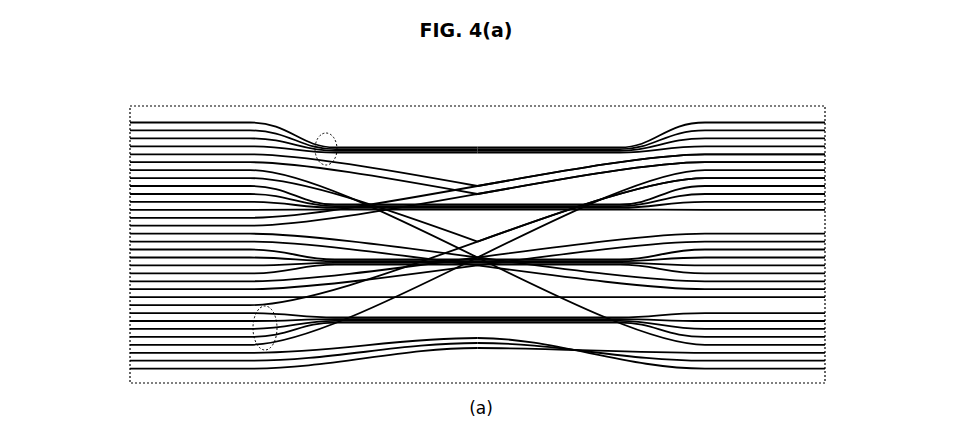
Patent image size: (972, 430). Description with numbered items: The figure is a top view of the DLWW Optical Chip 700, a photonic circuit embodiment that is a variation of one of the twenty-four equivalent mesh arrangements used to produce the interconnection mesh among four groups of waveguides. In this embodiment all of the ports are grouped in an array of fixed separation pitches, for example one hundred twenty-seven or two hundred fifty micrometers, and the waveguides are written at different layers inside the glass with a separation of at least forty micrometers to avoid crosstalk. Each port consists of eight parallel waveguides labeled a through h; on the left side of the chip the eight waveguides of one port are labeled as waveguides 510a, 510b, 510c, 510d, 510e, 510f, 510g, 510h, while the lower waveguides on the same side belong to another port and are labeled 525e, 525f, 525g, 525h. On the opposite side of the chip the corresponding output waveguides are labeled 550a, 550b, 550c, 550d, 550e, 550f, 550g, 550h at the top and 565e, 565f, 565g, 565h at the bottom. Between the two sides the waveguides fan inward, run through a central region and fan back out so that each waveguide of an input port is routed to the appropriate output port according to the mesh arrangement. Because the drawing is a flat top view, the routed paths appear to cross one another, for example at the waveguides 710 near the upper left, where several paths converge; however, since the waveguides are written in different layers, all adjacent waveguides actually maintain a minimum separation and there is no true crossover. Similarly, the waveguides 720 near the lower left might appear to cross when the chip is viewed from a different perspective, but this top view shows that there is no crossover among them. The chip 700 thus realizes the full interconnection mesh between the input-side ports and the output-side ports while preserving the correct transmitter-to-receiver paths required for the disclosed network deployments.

The DLWW Optical Chip 700 is at (257, 111).
The waveguides 710 is at (325, 133).
The waveguides 720 is at (276, 355).
The waveguide a of port 510 510a is at (125, 134).
The waveguide b of port 510 510b is at (304, 139).
The waveguide c of port 510 510c is at (304, 144).
The waveguide d of port 510 510d is at (304, 149).
The waveguide e of port 510 510e is at (125, 174).
The waveguide f of port 510 510f is at (304, 178).
The waveguide g of port 510 510g is at (304, 213).
The waveguide h of port 510 510h is at (304, 210).
The waveguide e of port 525 525e is at (125, 355).
The waveguide f of port 525 525f is at (304, 345).
The waveguide g of port 525 525g is at (304, 352).
The waveguide h of port 525 525h is at (304, 358).
The waveguide a of port 550 550a is at (830, 134).
The waveguide b of port 550 550b is at (652, 139).
The waveguide c of port 550 550c is at (652, 144).
The waveguide d of port 550 550d is at (652, 149).
The waveguide e of port 550 550e is at (832, 171).
The waveguide f of port 550 550f is at (652, 178).
The waveguide g of port 550 550g is at (652, 213).
The waveguide h of port 550 550h is at (652, 210).
The waveguide e of port 565 565e is at (829, 355).
The waveguide f of port 565 565f is at (652, 350).
The waveguide g of port 565 565g is at (652, 352).
The waveguide h of port 565 565h is at (652, 353).